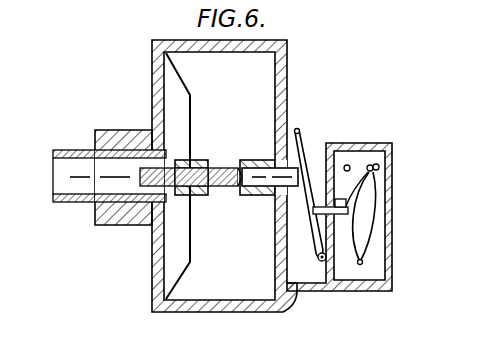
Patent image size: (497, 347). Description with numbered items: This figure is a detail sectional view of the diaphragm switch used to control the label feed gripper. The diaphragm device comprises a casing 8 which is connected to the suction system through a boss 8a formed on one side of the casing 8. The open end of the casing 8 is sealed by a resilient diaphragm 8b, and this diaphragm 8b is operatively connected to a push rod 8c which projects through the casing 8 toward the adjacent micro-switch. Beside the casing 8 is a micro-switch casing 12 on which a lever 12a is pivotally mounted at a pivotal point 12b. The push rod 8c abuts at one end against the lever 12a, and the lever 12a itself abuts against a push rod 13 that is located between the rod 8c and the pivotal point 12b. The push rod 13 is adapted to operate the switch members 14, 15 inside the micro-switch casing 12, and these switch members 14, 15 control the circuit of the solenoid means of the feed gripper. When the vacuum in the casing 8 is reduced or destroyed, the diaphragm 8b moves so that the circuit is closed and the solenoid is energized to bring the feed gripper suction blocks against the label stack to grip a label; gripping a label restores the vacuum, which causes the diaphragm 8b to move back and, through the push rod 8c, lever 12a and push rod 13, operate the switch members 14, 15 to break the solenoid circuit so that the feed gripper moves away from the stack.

The casing 8 is at (287, 101).
The boss 8a is at (131, 135).
The resilient diaphragm 8b is at (185, 97).
The push rod 8c is at (242, 180).
The micro-switch casing 12 is at (380, 170).
The lever 12a is at (300, 130).
The pivotal point 12b is at (322, 262).
The push rod 13 is at (346, 203).
The switch member 14 is at (373, 195).
The switch member 15 is at (374, 215).